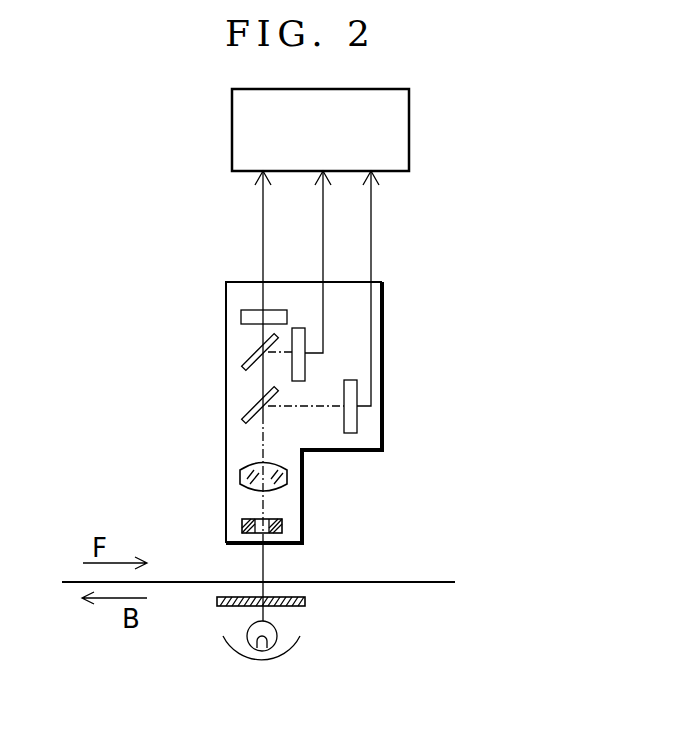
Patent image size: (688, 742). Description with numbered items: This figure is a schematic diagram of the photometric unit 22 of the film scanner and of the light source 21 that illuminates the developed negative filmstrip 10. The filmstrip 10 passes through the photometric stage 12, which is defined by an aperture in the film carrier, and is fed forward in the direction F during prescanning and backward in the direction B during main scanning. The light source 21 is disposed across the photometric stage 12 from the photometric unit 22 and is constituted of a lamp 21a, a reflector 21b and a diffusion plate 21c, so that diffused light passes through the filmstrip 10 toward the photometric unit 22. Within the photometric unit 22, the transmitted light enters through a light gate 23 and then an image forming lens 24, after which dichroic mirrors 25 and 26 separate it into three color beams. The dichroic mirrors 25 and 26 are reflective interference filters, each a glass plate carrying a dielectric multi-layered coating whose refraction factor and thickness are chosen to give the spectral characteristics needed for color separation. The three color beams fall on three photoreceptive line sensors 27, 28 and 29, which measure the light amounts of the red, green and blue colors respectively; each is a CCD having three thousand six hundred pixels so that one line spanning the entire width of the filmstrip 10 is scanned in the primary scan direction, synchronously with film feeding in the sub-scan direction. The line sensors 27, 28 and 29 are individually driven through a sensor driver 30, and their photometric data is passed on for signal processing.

The sensor driver 30 is at (409, 130).
The photometric unit 22 is at (404, 318).
The photoreceptive line sensor 29 is at (241, 316).
The photoreceptive line sensor 28 is at (301, 327).
The photoreceptive line sensor 27 is at (357, 421).
The dichroic mirror 26 is at (243, 362).
The dichroic mirror 25 is at (243, 416).
The image forming lens 24 is at (240, 480).
The light gate 23 is at (242, 527).
The photometric stage 12 is at (316, 549).
The negative filmstrip 10 is at (428, 582).
The light source 21 is at (423, 590).
The lamp 21a is at (276, 628).
The reflector 21b is at (298, 652).
The diffusion plate 21c is at (305, 601).